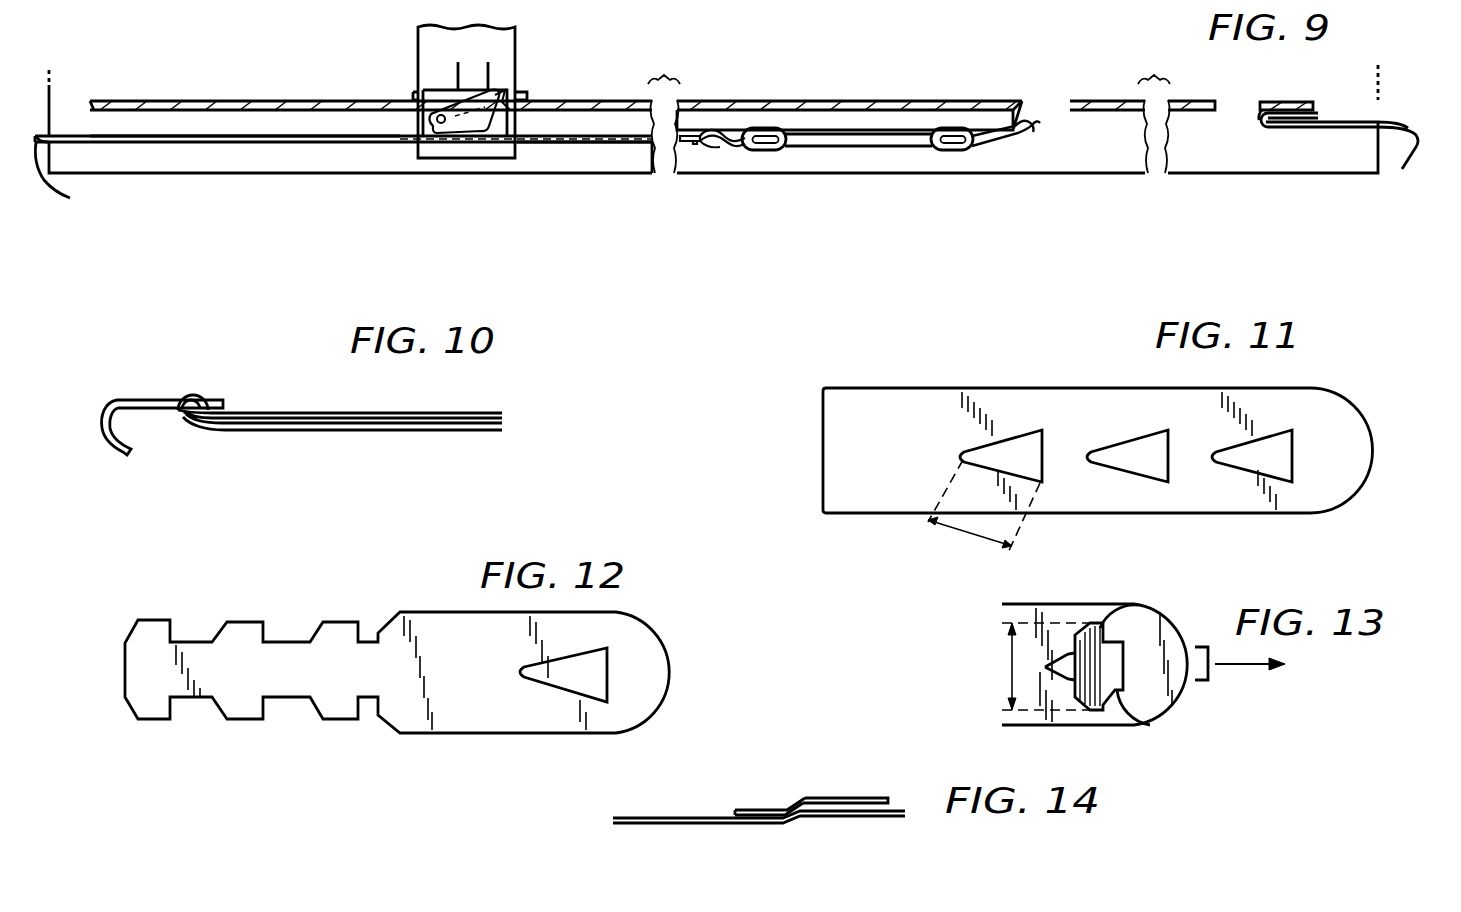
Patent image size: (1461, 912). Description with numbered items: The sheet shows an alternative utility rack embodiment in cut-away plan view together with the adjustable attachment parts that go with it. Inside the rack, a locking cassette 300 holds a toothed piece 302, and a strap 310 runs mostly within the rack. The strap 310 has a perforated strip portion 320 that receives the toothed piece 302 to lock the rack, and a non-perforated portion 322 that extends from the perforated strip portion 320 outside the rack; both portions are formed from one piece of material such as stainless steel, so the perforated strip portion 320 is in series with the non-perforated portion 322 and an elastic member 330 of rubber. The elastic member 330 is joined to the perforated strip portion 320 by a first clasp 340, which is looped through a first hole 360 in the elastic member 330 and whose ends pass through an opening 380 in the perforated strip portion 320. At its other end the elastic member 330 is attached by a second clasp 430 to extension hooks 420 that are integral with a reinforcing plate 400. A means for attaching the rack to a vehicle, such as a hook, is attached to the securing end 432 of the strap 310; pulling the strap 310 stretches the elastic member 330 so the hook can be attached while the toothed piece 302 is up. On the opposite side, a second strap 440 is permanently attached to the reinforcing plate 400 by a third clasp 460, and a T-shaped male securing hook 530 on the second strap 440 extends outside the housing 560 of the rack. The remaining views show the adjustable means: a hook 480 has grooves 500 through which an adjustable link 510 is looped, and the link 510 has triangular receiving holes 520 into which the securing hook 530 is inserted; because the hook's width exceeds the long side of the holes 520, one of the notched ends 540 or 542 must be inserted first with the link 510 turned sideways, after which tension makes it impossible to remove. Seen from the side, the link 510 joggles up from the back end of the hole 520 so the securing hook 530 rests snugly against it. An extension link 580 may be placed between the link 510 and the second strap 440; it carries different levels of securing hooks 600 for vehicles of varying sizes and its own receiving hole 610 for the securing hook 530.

In FIG. 9, the locking cassette 300 is at (515, 58).
In FIG. 9, the toothed piece 302 is at (504, 86).
In FIG. 9, the strap 310 is at (280, 135).
In FIG. 9, the perforated strip portion 320 is at (559, 143).
In FIG. 9, the non-perforated portion 322 is at (225, 135).
In FIG. 9, the elastic member 330 is at (840, 128).
In FIG. 9, the first clasp 340 is at (725, 144).
In FIG. 9, the first hole 360 is at (768, 149).
In FIG. 9, the opening 380 is at (690, 132).
In FIG. 9, the reinforcing plate 400 is at (183, 100).
In FIG. 9, the extension hooks 420 is at (1026, 132).
In FIG. 9, the second clasp 430 is at (985, 149).
In FIG. 9, the securing end 432 is at (79, 179).
In FIG. 9, the second strap 440 is at (1310, 128).
In FIG. 9, the third clasp 460 is at (1260, 119).
In FIG. 10, the hook 480 is at (135, 395).
In FIG. 10, the grooves 500 is at (215, 395).
In FIG. 10, the adjustable link 510 is at (333, 410).
In FIG. 11, the adjustable link 510 is at (908, 352).
In FIG. 13, the adjustable link 510 is at (1185, 618).
In FIG. 14, the adjustable link 510 is at (845, 797).
In FIG. 11, the receiving holes 520 is at (1208, 450).
In FIG. 13, the receiving holes 520 is at (1140, 730).
In FIG. 14, the receiving holes 520 is at (785, 830).
In FIG. 9, the securing hook 530 is at (1346, 157).
In FIG. 13, the securing hook 530 is at (1105, 630).
In FIG. 14, the securing hook 530 is at (775, 775).
In FIG. 13, the notched end 540 is at (1097, 623).
In FIG. 13, the notched end 542 is at (1098, 713).
In FIG. 9, the housing 560 is at (248, 173).
In FIG. 12, the extension link 580 is at (440, 612).
In FIG. 12, the securing hooks 600 is at (345, 620).
In FIG. 12, the receiving hole 610 is at (560, 677).